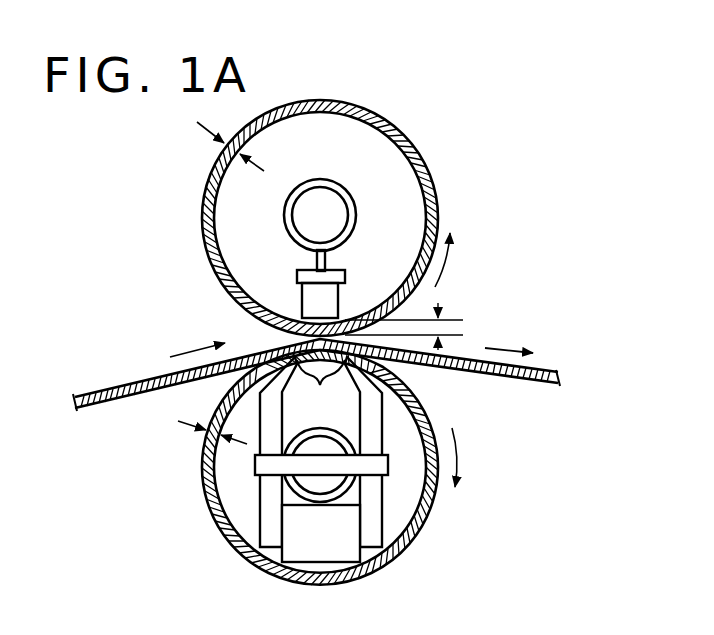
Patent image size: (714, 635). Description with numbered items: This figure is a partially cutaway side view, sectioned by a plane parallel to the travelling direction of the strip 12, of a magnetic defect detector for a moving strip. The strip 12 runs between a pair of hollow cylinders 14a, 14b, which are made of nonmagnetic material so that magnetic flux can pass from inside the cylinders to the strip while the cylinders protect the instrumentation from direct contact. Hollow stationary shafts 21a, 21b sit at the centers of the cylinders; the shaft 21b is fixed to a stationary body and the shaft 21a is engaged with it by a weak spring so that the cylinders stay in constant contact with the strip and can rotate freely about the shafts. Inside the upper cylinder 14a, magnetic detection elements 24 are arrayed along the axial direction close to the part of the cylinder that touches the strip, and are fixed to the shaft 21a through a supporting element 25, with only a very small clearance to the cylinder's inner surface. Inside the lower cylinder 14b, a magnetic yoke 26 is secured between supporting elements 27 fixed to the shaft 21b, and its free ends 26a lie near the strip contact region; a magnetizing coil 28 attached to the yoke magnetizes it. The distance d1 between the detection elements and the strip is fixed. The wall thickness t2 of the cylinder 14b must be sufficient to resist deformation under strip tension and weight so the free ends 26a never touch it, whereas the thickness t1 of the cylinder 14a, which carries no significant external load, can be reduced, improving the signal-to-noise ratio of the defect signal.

The strip 12 is at (114, 390).
The hollow cylinder 14a is at (212, 258).
The hollow cylinder 14b is at (430, 410).
The hollow stationary shaft 21a is at (314, 181).
The hollow stationary shaft 21b is at (352, 490).
The magnetic detection elements 24 is at (342, 297).
The supporting element 25 is at (340, 248).
The magnetic yoke 26 is at (260, 517).
The free ends of the magnetic yoke 26a is at (325, 388).
The supporting element 27 is at (255, 464).
The magnetizing coil 28 is at (345, 547).
The thickness of hollow cylinder 14a t1 is at (219, 142).
The thickness of hollow cylinder 14b t2 is at (202, 430).
The distance between the magnetic detection elements and the strip d1 is at (418, 326).